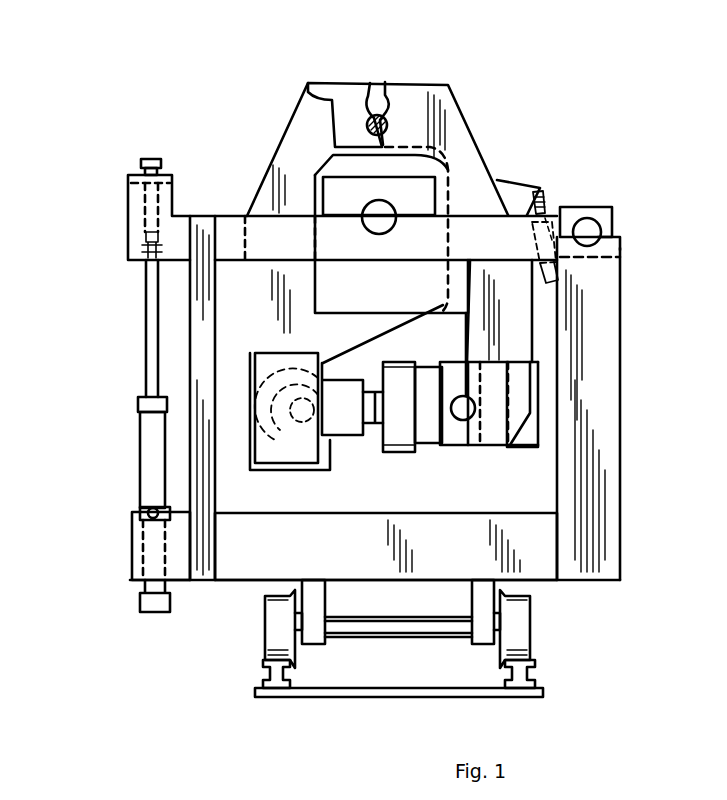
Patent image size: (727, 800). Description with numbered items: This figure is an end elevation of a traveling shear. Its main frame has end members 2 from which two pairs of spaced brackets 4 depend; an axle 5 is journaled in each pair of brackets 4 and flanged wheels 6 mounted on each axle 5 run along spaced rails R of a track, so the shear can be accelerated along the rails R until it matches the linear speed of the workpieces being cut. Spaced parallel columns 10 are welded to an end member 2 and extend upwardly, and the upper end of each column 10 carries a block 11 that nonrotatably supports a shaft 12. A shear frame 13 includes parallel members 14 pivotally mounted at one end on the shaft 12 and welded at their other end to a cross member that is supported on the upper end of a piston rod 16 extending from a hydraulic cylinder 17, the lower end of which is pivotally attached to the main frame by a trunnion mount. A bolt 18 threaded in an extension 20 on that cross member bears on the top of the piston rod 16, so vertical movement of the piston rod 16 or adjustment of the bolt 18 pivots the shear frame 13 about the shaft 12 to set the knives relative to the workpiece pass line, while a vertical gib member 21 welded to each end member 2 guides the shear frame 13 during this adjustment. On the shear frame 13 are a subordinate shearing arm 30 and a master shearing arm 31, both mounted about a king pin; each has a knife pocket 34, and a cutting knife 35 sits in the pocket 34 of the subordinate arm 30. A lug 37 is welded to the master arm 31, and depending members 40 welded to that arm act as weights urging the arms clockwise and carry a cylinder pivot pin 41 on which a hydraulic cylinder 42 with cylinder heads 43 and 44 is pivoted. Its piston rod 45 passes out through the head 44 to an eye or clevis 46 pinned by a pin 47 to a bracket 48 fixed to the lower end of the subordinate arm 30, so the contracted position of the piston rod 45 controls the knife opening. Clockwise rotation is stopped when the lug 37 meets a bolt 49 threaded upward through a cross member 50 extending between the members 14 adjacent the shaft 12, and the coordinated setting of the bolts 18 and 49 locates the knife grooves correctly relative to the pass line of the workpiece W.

The end member 2 is at (543, 565).
The bracket 4 is at (318, 600).
The axle 5 is at (380, 617).
The flanged wheel 6 is at (525, 632).
The rail R is at (535, 670).
The column 10 is at (595, 362).
The block 11 is at (602, 212).
The shaft 12 is at (622, 243).
The shear frame 13 is at (125, 246).
The parallel member 14 is at (230, 225).
The piston rod 16 is at (146, 320).
The hydraulic cylinder 17 is at (146, 465).
The bolt 18 is at (140, 163).
The extension 20 is at (128, 180).
The gib member 21 is at (203, 222).
The subordinate shearing arm 30 is at (302, 120).
The master shearing arm 31 is at (450, 115).
The knife pocket 34 is at (322, 92).
The cutting knife 35 is at (353, 93).
The workpiece W is at (388, 112).
The lug 37 is at (516, 185).
The depending member 40 is at (515, 323).
The cylinder pivot pin 41 is at (466, 422).
The hydraulic cylinder 42 is at (428, 440).
The cylinder head 43 is at (533, 447).
The cylinder head 44 is at (402, 445).
The piston rod 45 is at (375, 425).
The eye or clevis 46 is at (345, 390).
The pin 47 is at (305, 420).
The bracket 48 is at (265, 448).
The bolt 49 is at (545, 200).
The cross member 50 is at (553, 228).